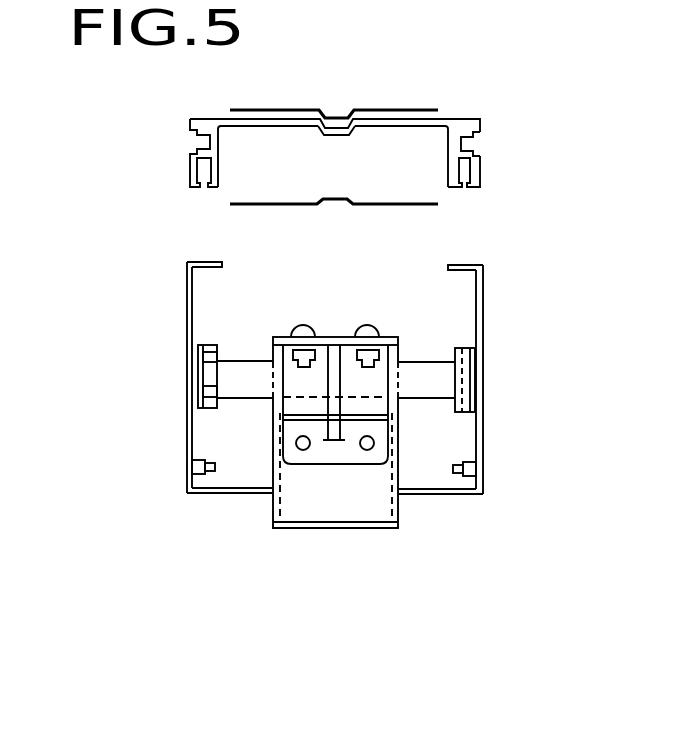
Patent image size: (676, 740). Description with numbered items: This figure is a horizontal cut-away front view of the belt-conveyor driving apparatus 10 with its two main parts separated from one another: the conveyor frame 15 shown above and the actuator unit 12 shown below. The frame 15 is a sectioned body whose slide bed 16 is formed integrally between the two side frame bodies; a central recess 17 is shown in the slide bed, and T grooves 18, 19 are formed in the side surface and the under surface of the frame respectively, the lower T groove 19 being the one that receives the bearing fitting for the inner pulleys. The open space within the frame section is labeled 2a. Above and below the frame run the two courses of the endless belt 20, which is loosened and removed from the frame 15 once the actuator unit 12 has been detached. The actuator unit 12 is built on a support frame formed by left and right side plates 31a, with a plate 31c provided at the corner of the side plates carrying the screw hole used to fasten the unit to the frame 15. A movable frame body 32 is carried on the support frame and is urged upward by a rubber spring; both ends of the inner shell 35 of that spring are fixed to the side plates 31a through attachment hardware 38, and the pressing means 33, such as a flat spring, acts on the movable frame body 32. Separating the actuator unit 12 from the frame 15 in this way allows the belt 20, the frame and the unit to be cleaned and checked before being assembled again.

The mounting assembly 10 is at (118, 125).
The frame 15 is at (187, 124).
The slide bed 16 is at (262, 127).
The groove 17 is at (323, 135).
The T groove 18 is at (474, 139).
The T groove 19 is at (471, 168).
The cavity 2a is at (333, 156).
The endless belt 20 is at (405, 109).
The actuator unit 12 is at (183, 288).
The side plates 31a is at (187, 333).
The plate 31c is at (214, 262).
The pressing means 33 is at (397, 331).
The inner shell 35 is at (238, 368).
The attachment hardware 38 is at (213, 408).
The movable frame body 32 is at (283, 530).